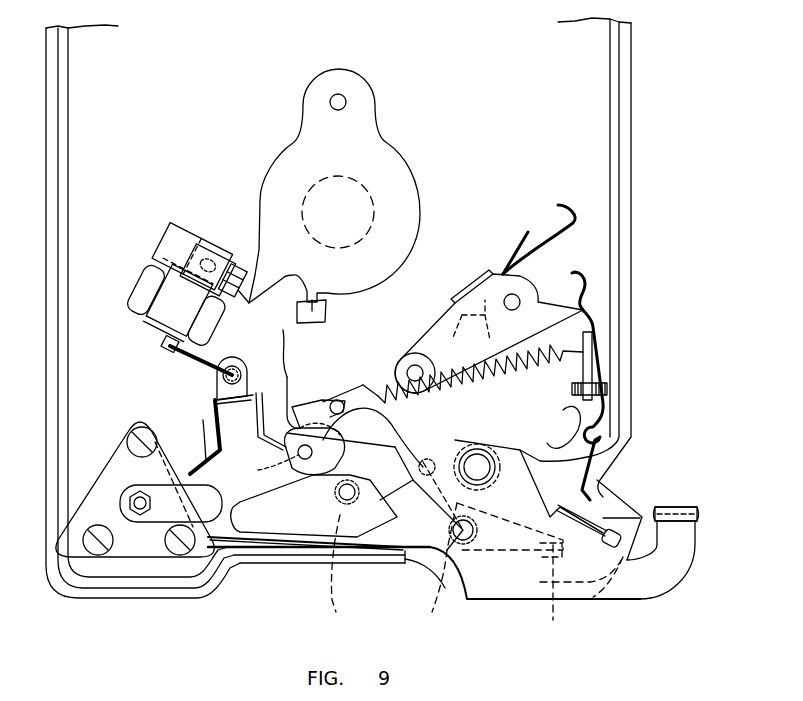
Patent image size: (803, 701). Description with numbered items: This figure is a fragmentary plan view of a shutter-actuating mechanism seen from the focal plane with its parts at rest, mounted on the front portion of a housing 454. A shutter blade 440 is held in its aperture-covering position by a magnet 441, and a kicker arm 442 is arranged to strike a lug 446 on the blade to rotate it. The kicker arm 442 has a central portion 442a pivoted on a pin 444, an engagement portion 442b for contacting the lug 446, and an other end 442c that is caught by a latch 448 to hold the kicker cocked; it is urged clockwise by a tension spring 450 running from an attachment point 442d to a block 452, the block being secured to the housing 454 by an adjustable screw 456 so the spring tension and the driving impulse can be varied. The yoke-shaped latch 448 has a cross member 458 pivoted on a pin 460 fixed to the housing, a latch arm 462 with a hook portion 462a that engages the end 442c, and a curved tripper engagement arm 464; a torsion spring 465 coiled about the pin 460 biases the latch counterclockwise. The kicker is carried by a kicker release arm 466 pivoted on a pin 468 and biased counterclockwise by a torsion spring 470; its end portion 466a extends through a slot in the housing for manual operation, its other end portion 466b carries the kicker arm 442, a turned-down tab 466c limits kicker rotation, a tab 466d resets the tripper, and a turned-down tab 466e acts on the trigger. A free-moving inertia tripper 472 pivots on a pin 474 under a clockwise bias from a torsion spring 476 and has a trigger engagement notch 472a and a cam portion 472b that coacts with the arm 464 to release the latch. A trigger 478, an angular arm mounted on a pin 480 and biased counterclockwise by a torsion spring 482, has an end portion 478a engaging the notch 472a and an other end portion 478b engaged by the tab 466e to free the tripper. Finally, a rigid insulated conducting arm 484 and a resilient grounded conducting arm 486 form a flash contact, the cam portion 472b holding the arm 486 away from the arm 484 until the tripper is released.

The shutter blade 440 is at (412, 225).
The magnet 441 is at (236, 263).
The kicker arm 442 is at (307, 407).
The central portion 442a is at (286, 470).
The engagement portion 442b is at (378, 386).
The other end 442c is at (287, 360).
The spring attachment point 442d is at (337, 400).
The pin 444 is at (300, 462).
The lug 446 is at (316, 292).
The latch 448 is at (206, 407).
The tension spring 450 is at (508, 370).
The block 452 is at (598, 356).
The housing 454 is at (598, 246).
The adjustable screw 456 is at (605, 388).
The cross member 458 is at (214, 422).
The pin 460 is at (222, 374).
The latch arm 462 is at (254, 424).
The hook portion 462a is at (264, 368).
The tripper engagement arm 464 is at (170, 466).
The torsion spring 465 is at (166, 349).
The kicker release arm 466 is at (648, 600).
The end portion 466a is at (676, 507).
The other end portion 466b is at (393, 428).
The turned-down tab 466c is at (367, 411).
The tab 466d is at (300, 520).
The turned-down tab 466e is at (593, 510).
The pin 468 is at (480, 474).
The torsion spring 470 is at (582, 467).
The inertia tripper 472 is at (343, 516).
The trigger engagement notch 472a is at (392, 514).
The cam portion 472b is at (230, 565).
The pin 474 is at (348, 505).
The torsion spring 476 is at (353, 573).
The trigger 478 is at (508, 553).
The end portion 478a is at (419, 469).
The other end portion 478b is at (581, 592).
The pin 480 is at (420, 588).
The torsion spring 482 is at (463, 545).
The conducting arm 484 is at (166, 520).
The conducting arm 486 is at (218, 588).